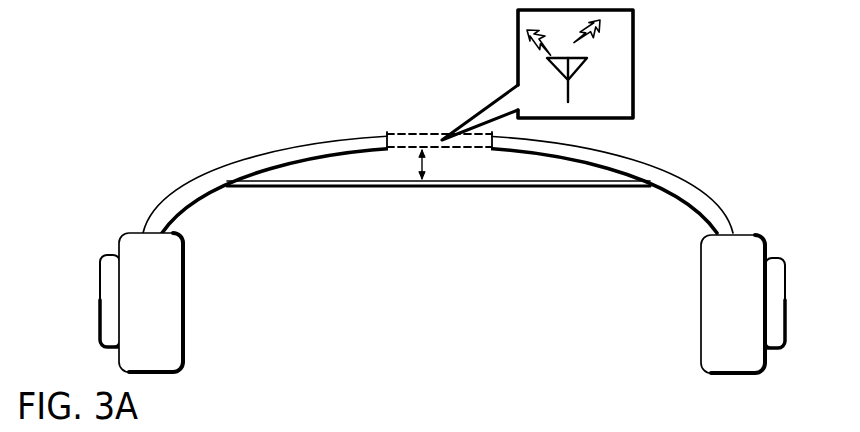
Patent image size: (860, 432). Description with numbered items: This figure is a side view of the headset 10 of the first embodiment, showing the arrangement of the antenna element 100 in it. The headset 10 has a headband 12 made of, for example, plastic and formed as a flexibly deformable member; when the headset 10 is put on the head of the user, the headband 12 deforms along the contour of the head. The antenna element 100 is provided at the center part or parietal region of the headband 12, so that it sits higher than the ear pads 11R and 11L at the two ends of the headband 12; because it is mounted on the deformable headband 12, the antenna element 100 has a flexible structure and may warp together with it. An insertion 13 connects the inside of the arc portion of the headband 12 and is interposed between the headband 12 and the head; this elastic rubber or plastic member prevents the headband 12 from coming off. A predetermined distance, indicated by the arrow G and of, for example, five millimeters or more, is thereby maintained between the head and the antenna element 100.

The headset 10 is at (453, 249).
The ear pad 11R is at (173, 300).
The ear pad 11L is at (708, 315).
The headband 12 is at (628, 160).
The insertion 13 is at (498, 188).
The antenna element 100 is at (633, 77).